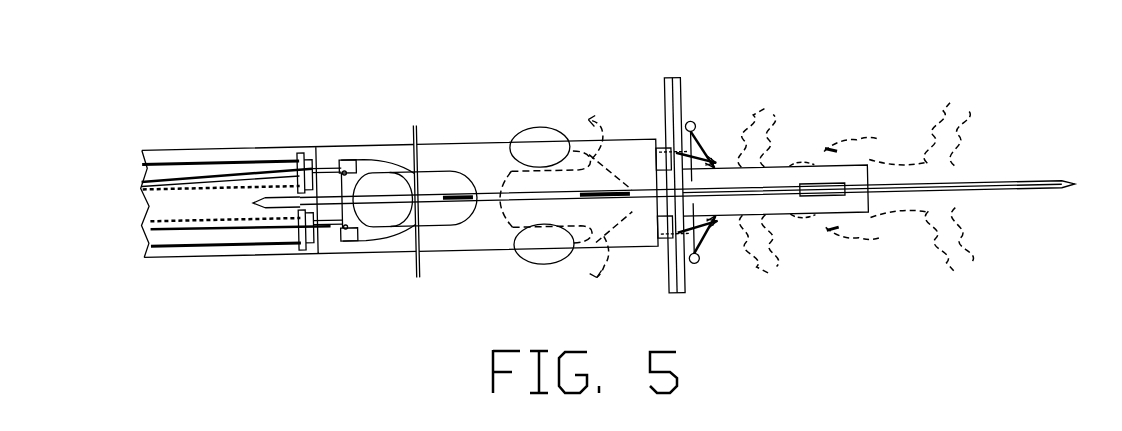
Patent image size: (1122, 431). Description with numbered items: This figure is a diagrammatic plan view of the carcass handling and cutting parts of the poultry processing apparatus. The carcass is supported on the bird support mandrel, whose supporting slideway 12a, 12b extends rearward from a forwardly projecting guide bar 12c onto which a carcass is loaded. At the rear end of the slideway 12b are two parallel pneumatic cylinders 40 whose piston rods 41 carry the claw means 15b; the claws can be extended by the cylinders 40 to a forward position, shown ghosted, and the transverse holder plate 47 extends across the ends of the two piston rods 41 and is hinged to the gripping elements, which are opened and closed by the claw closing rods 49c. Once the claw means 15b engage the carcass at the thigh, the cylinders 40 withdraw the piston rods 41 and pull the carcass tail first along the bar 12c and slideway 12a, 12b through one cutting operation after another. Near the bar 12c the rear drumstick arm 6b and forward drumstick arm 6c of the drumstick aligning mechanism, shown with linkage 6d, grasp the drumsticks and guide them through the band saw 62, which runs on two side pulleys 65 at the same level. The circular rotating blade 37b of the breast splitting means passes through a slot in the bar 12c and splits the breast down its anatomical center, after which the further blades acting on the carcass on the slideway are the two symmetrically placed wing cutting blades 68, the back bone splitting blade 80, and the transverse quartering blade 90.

The supporting slideway 12a is at (352, 153).
The supporting slideway 12b is at (480, 162).
The guide bar 12c is at (1033, 199).
The claw means 15b is at (378, 160).
The circular rotating blade 37b is at (607, 197).
The pneumatic cylinders 40 is at (203, 233).
The piston rods 41 is at (327, 229).
The transverse holder plate 47 is at (160, 204).
The claw closing rods 49c is at (273, 166).
The band saw 62 is at (672, 110).
The side pulleys 65 is at (687, 96).
The wing cutting blades 68 is at (542, 253).
The back bone splitting blade 80 is at (452, 203).
The transverse quartering blade 90 is at (417, 135).
The rear drumstick arm 6b is at (715, 219).
The forward drumstick arm 6c is at (713, 176).
The arm pivot linkage 6d is at (663, 173).